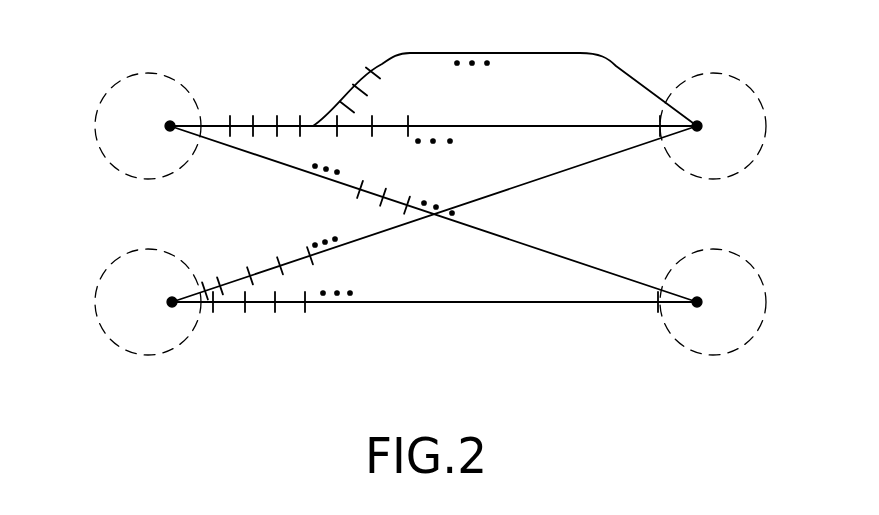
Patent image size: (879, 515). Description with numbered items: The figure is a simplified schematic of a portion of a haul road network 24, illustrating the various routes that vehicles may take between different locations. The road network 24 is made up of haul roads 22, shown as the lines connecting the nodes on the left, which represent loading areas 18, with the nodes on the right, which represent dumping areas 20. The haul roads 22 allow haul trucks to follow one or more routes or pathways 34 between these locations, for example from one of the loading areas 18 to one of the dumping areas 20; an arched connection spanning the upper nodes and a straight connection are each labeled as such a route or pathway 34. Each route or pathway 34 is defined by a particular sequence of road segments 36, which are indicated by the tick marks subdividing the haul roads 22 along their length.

The loading area 18 is at (103, 259).
The dumping area 20 is at (770, 152).
The haul road 22 is at (266, 160).
The road network 24 is at (467, 308).
The route or pathway 34 is at (588, 54).
The road segment 36 is at (367, 78).